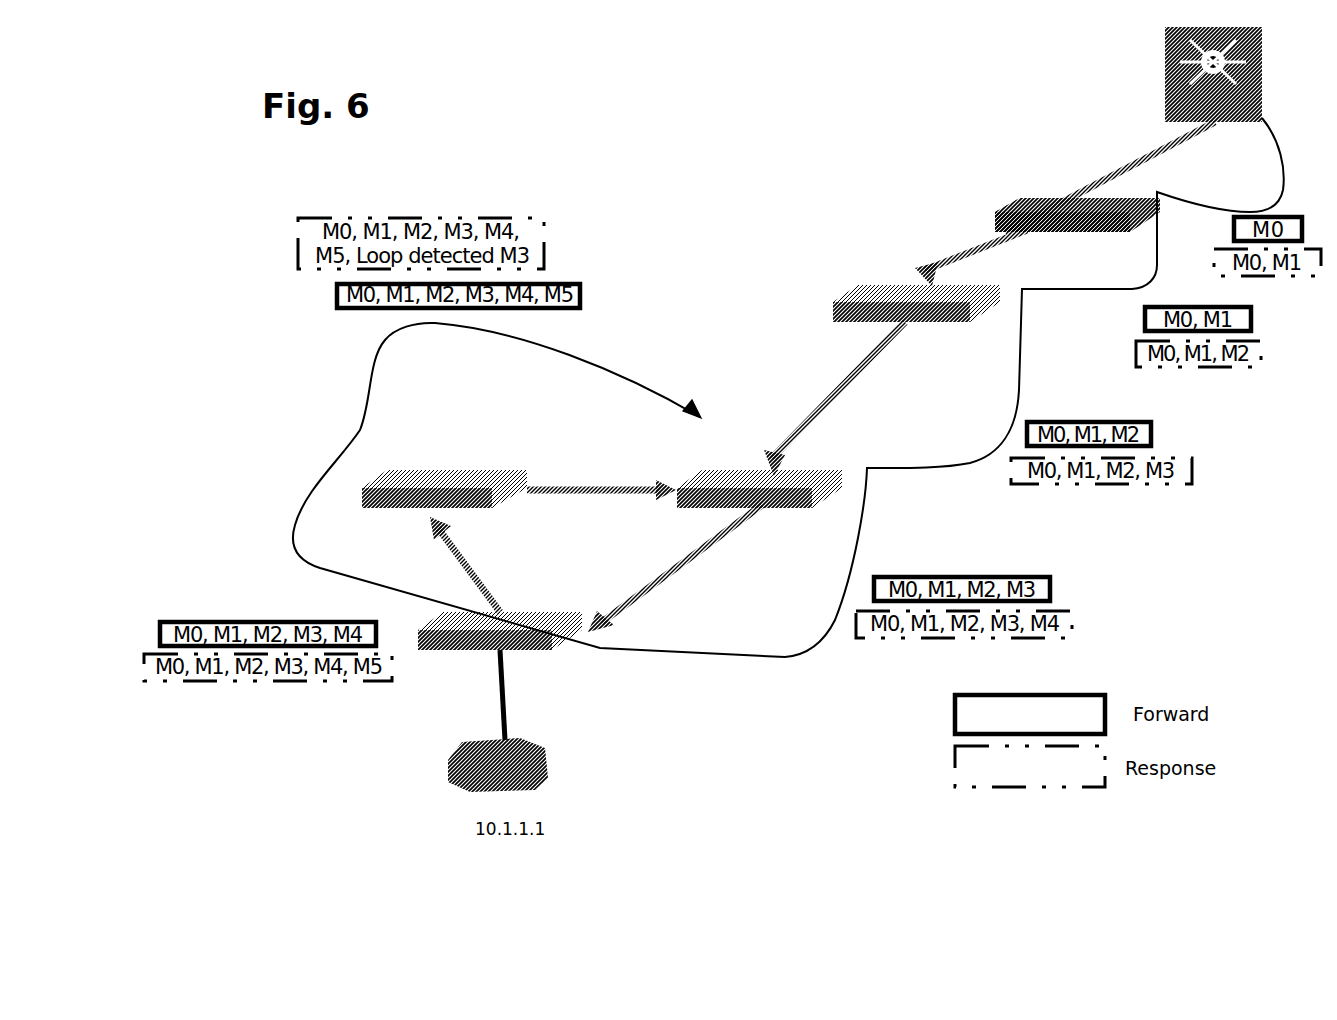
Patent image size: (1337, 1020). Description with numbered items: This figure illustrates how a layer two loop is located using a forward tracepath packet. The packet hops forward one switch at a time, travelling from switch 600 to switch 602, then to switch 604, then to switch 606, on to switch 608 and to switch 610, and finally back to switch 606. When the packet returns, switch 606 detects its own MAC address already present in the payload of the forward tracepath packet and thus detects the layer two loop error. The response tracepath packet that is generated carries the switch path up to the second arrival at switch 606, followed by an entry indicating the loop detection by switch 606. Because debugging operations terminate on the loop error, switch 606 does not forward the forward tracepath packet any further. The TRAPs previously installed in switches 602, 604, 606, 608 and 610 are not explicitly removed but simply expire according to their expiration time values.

The switch 600 is at (1165, 100).
The switch 602 is at (1058, 198).
The switch 604 is at (880, 290).
The switch 606 is at (770, 508).
The switch 608 is at (520, 650).
The switch 610 is at (428, 472).